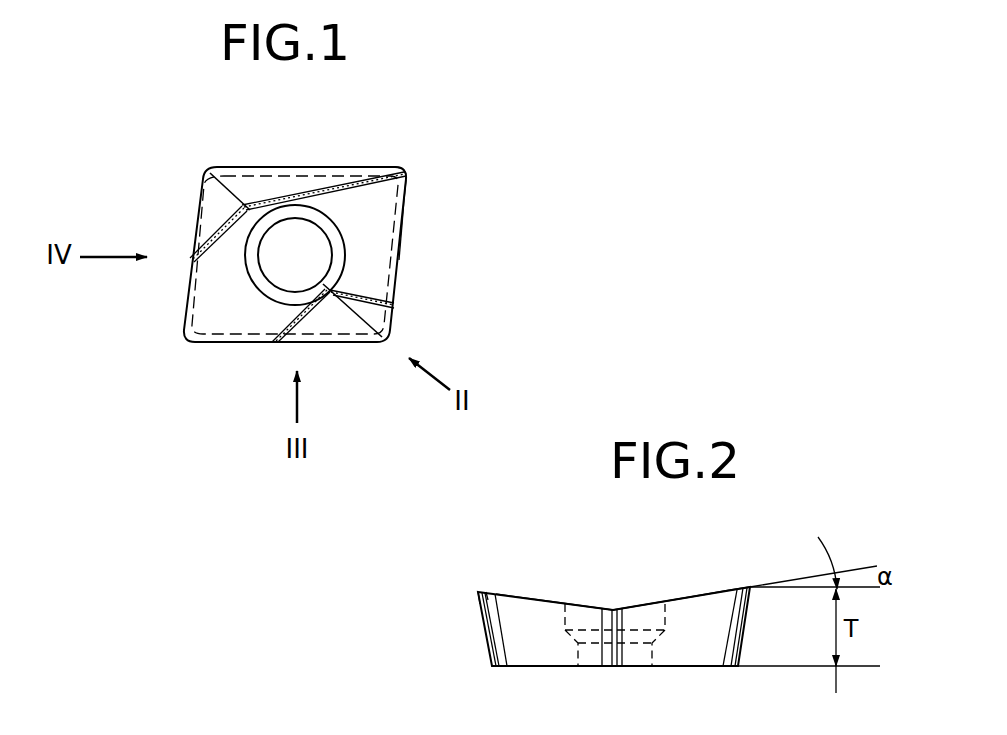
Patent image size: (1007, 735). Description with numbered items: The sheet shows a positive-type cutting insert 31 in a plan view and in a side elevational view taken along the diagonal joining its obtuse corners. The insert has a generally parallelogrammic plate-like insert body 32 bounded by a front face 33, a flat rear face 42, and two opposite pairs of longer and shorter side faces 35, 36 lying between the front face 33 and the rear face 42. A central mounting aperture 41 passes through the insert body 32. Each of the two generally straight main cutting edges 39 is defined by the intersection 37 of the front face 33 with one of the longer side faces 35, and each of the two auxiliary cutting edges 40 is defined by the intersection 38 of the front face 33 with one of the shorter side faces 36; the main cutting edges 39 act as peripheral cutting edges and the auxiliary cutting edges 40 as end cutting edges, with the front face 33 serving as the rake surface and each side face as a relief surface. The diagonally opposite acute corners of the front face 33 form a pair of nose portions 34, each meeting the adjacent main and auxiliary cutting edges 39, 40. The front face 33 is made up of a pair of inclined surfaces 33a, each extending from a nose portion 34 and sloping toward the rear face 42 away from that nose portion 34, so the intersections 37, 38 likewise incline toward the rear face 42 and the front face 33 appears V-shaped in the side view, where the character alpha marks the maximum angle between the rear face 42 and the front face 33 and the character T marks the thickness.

In FIG. 1, the cutting insert 31 is at (474, 93).
In FIG. 2, the cutting insert 31 is at (827, 516).
In FIG. 1, the insert body 32 is at (410, 308).
In FIG. 1, the front face 33 is at (208, 178).
In FIG. 2, the front face 33 is at (687, 595).
In FIG. 1, the inclined surfaces 33a is at (288, 180).
In FIG. 2, the inclined surfaces 33a is at (547, 598).
In FIG. 1, the nose portions 34 is at (418, 168).
In FIG. 2, the nose portions 34 is at (477, 590).
In FIG. 1, the longer side faces 35 is at (316, 166).
In FIG. 2, the longer side faces 35 is at (500, 633).
In FIG. 1, the shorter side faces 36 is at (403, 257).
In FIG. 2, the shorter side faces 36 is at (723, 630).
In FIG. 1, the intersection 37 is at (366, 167).
In FIG. 2, the intersection 37 is at (510, 595).
In FIG. 1, the intersection 38 is at (405, 223).
In FIG. 2, the intersection 38 is at (717, 590).
In FIG. 1, the main cutting edges 39 is at (388, 160).
In FIG. 2, the main cutting edges 39 is at (488, 590).
In FIG. 1, the auxiliary cutting edges 40 is at (409, 202).
In FIG. 2, the auxiliary cutting edges 40 is at (735, 587).
In FIG. 1, the central mounting aperture 41 is at (318, 281).
In FIG. 2, the central mounting aperture 41 is at (655, 617).
In FIG. 2, the rear face 42 is at (682, 667).